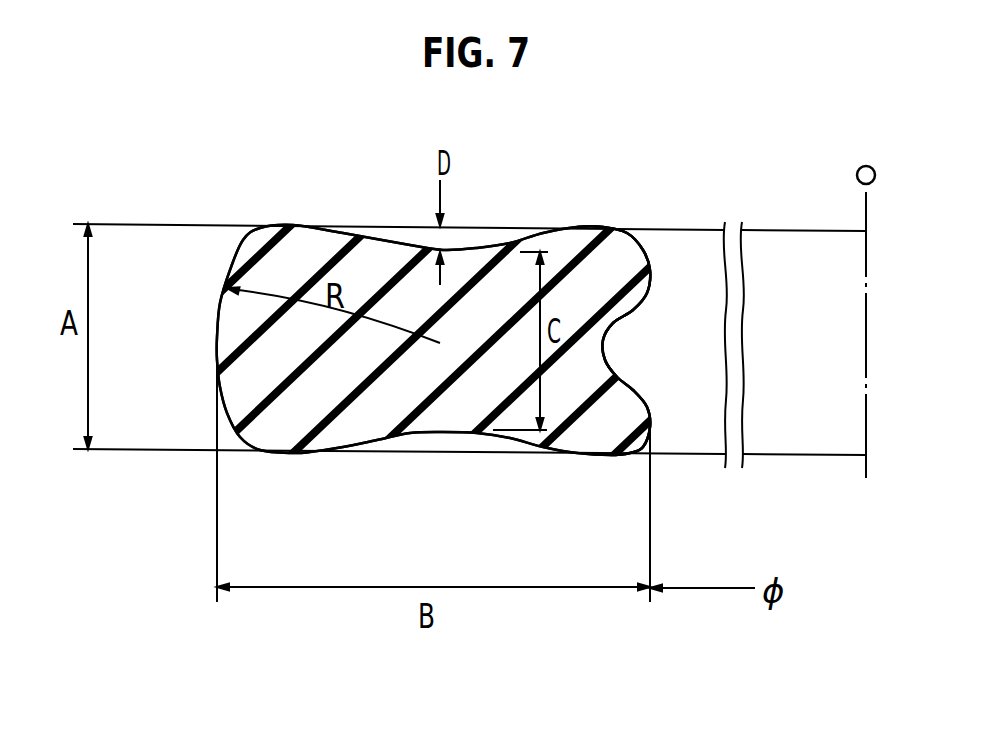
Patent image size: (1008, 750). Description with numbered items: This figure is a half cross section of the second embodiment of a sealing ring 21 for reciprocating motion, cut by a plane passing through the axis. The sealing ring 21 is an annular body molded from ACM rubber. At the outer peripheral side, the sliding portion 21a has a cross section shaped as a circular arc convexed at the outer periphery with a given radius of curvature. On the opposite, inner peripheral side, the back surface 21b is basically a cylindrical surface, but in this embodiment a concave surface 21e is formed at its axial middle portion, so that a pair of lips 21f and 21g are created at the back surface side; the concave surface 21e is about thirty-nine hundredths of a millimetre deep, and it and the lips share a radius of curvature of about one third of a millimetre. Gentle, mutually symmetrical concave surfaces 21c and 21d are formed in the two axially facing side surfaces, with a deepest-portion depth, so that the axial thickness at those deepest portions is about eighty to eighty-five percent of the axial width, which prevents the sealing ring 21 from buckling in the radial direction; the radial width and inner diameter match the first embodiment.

The sealing ring 21 is at (305, 200).
The sliding portion 21a is at (218, 317).
The back surface 21b is at (665, 263).
The concave surface 21c is at (463, 247).
The concave surface 21d is at (430, 438).
The concave surface 21e is at (617, 343).
The lip 21f is at (618, 258).
The lip 21g is at (650, 455).